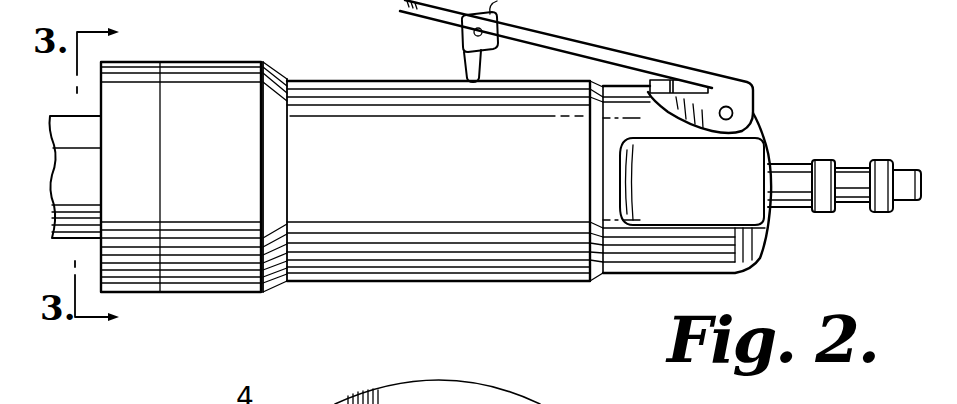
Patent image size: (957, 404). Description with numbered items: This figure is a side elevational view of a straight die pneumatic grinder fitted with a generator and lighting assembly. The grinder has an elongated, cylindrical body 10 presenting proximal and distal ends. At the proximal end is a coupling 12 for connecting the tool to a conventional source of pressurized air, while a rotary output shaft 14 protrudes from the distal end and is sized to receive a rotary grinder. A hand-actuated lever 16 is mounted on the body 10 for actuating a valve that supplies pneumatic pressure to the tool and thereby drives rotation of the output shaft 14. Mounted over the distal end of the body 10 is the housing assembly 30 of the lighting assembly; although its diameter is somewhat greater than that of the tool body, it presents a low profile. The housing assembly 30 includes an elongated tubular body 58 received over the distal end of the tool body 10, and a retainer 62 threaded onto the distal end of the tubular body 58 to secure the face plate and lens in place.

The elongated body 10 is at (491, 283).
The coupling 12 is at (852, 168).
The rotary output shaft 14 is at (62, 115).
The hand-actuated lever 16 is at (596, 46).
The housing assembly 30 is at (203, 180).
The elongated tubular body 58 is at (218, 288).
The retainer 62 is at (143, 72).